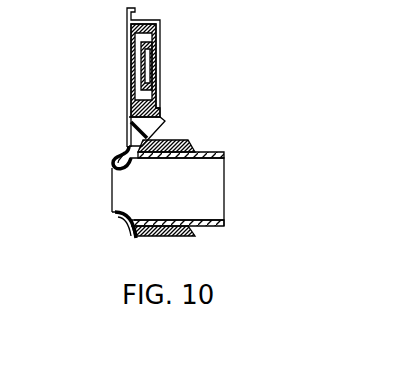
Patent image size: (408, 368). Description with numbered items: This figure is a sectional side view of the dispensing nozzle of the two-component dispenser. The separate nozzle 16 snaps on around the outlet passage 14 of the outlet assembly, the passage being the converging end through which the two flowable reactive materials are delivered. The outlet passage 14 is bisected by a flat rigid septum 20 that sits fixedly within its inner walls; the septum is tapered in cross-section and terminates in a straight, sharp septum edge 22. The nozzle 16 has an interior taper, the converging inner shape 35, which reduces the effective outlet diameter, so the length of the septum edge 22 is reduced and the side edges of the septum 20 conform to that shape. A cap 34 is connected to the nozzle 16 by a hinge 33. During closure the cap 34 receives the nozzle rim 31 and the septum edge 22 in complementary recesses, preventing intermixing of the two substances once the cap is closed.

The outlet passage 14 is at (198, 152).
The nozzle 16 is at (182, 237).
The septum 20 is at (140, 180).
The septum edge 22 is at (112, 198).
The nozzle rim 31 is at (117, 162).
The hinge 33 is at (127, 128).
The cap 34 is at (155, 62).
The converging inner shape 35 is at (127, 227).